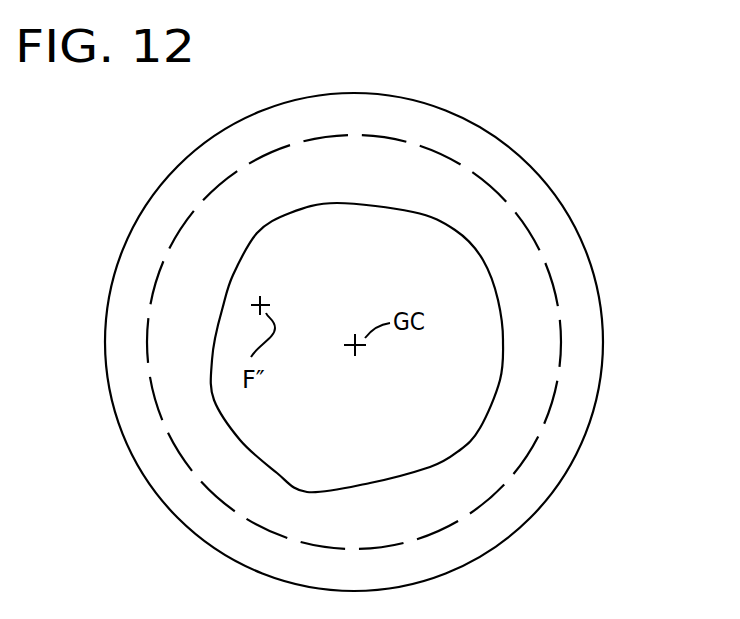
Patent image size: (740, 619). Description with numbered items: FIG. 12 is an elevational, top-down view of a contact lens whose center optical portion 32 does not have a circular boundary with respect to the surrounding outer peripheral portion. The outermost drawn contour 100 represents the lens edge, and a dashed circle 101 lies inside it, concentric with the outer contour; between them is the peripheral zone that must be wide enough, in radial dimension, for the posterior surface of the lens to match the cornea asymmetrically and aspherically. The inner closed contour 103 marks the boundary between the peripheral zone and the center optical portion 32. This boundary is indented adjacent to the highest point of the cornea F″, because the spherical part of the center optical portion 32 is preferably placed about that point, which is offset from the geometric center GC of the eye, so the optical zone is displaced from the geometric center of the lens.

The outer ring / gear blank outline 100 is at (583, 333).
The pitch circle (dashed) 101 is at (495, 222).
The inner profile contour 103 is at (411, 225).
The center optical portion 32 is at (213, 398).